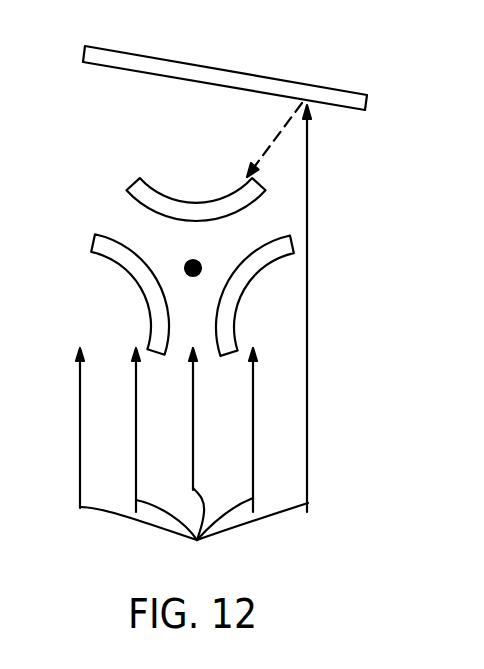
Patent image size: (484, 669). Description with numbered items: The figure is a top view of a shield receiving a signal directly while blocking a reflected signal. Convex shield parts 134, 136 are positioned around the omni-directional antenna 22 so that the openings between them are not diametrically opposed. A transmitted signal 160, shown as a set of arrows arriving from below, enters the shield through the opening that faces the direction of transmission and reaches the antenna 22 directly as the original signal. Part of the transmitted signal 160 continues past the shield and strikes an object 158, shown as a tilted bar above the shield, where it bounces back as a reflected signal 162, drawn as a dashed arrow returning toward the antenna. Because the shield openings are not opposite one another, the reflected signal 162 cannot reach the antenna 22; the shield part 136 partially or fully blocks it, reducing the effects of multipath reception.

The object 158 is at (185, 62).
The reflected signal 162 is at (287, 123).
The shield part 136 is at (128, 186).
The shield part 134 is at (93, 238).
The omni-directional antenna 22 is at (186, 266).
The transmitted signal 160 is at (215, 568).